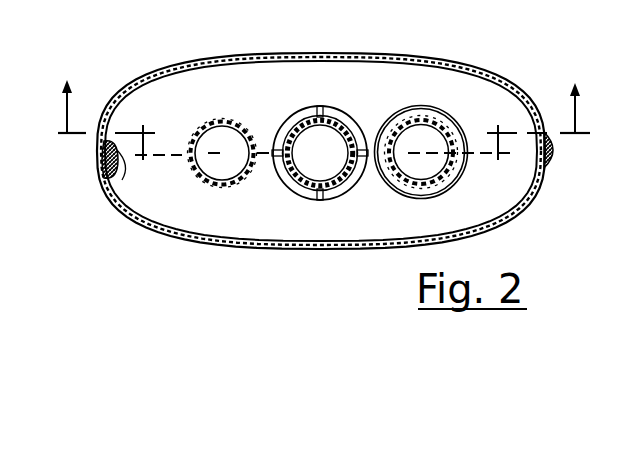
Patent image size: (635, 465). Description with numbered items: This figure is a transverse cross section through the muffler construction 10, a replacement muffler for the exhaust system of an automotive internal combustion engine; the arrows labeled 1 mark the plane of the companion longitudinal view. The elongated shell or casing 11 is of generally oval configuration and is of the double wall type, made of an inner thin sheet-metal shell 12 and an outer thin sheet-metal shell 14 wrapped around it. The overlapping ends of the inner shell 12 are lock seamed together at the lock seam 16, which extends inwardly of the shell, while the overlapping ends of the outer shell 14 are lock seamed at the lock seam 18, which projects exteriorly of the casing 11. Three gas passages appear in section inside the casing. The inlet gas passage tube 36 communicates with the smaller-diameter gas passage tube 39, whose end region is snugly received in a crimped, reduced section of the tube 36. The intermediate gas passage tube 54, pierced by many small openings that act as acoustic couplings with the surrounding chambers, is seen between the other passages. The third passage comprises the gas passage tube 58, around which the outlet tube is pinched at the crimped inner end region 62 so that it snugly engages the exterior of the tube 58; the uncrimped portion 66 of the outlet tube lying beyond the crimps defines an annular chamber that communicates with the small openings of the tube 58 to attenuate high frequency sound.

The section line 1- 1 is at (324, 90).
The muffler construction 10 is at (321, 124).
The shell or casing 11 is at (231, 57).
The inner shell 12 is at (166, 86).
The outer shell 14 is at (181, 72).
The lock seam 16 is at (113, 201).
The lock seam 18 is at (558, 152).
The inlet gas passage tube 36 is at (412, 152).
The gas passage tube 39 is at (391, 184).
The intermediate gas passage tube 54 is at (242, 96).
The gas passage tube 58 is at (303, 138).
The crimped inner end region 62 is at (280, 177).
The portion of the outlet tube 66 is at (302, 153).